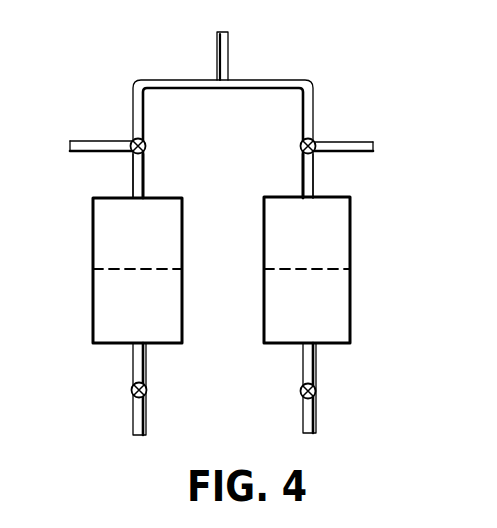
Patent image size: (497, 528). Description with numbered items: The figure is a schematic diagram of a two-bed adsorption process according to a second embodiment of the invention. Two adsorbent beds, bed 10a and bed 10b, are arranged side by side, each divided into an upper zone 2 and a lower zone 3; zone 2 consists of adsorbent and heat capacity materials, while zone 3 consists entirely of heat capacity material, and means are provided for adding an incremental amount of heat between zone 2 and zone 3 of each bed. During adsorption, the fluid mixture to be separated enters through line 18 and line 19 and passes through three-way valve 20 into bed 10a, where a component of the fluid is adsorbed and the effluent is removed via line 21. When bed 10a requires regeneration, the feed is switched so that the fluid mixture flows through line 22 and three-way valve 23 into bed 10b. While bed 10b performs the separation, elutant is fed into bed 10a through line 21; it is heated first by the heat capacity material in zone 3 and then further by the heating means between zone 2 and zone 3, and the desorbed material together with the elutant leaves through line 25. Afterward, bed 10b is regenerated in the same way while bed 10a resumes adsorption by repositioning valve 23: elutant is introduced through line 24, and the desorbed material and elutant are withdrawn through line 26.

The zone 2 is at (148, 244).
The zone 3 is at (148, 307).
The adsorbent bed 10a is at (93, 258).
The adsorbent bed 10b is at (350, 260).
The line 18 is at (228, 47).
The line 19 is at (133, 176).
The three-way valve 20 is at (131, 140).
The line 21 is at (133, 416).
The line 22 is at (316, 178).
The three-way valve 23 is at (316, 142).
The line 24 is at (318, 415).
The line 25 is at (96, 141).
The line 26 is at (364, 142).